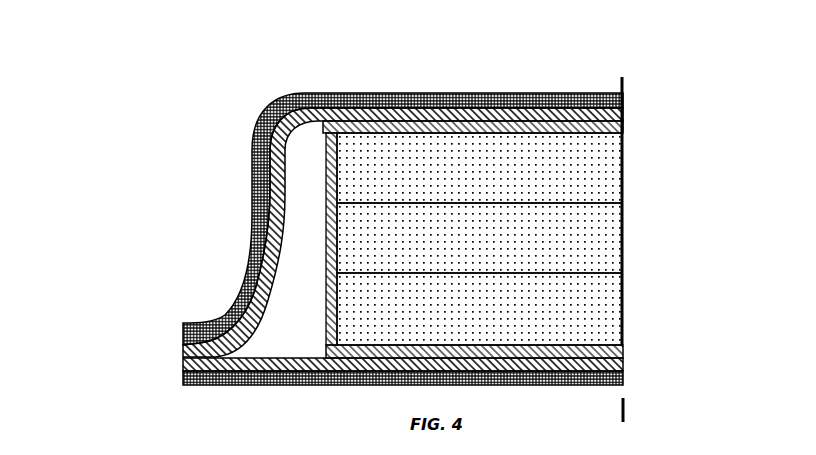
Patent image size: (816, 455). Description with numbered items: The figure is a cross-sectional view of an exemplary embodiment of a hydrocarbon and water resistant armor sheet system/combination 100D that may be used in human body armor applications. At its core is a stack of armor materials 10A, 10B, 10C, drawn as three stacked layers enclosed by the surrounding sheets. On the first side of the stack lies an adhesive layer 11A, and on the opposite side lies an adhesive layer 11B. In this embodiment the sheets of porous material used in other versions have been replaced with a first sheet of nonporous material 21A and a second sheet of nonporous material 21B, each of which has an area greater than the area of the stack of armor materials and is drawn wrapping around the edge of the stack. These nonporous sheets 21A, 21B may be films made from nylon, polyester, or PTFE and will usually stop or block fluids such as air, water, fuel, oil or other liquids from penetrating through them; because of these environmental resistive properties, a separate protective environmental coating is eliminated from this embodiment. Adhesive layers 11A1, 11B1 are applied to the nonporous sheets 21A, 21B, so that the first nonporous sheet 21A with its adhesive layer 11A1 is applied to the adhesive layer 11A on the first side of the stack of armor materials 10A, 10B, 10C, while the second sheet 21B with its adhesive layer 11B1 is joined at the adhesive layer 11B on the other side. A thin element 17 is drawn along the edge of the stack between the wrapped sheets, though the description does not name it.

The hydrocarbon and water resistant armor sheet system/combination 100D is at (147, 65).
The first sheet of nonporous material 21A is at (287, 103).
The adhesive layer 11A is at (497, 117).
The adhesive layer 11A1 is at (447, 117).
The side spacer strip 17 is at (333, 190).
The armor material 10A is at (607, 155).
The armor material 10B is at (613, 235).
The armor material 10C is at (622, 300).
The adhesive layer 11B1 is at (183, 368).
The adhesive layer 11B is at (333, 360).
The second sheet of nonporous material 21B is at (373, 385).